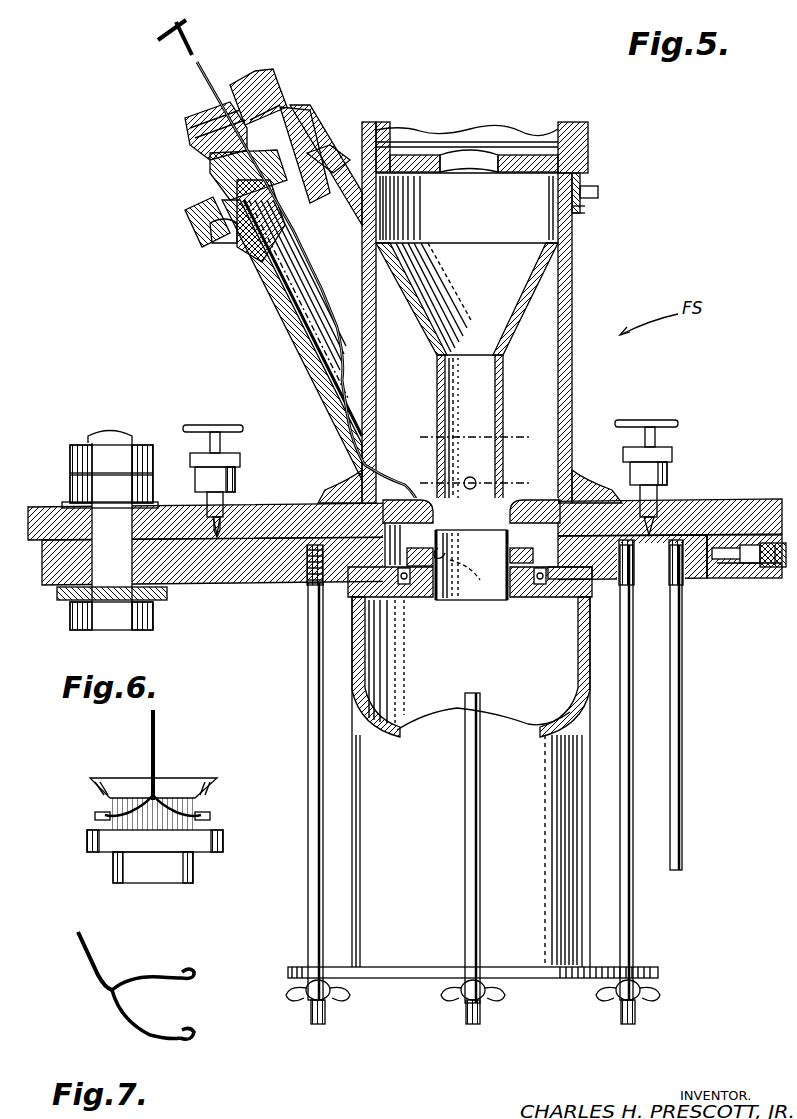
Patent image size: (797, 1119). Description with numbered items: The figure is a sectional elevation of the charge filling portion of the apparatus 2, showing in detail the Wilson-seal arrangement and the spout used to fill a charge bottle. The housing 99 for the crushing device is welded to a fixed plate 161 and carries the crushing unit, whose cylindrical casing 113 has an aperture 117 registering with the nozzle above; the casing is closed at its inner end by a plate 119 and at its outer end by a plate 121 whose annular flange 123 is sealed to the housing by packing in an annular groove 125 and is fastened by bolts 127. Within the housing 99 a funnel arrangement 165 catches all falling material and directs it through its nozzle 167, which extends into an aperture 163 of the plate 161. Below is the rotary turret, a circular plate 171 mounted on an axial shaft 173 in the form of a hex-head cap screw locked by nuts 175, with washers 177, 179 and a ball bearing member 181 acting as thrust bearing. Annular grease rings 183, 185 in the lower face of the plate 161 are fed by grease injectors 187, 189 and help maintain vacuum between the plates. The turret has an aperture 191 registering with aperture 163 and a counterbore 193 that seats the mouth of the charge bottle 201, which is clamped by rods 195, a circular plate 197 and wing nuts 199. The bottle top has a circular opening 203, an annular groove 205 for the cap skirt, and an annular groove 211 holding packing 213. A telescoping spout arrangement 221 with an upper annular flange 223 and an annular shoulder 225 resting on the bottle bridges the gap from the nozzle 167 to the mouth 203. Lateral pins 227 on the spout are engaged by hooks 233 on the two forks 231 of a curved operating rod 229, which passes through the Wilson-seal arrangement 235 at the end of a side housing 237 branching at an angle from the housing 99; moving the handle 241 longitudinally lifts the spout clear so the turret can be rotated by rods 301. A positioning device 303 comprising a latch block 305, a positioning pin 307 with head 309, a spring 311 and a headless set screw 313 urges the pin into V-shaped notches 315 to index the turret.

In FIG. 5, the apparatus 2 is at (640, 400).
In FIG. 5, the housing 99 is at (574, 306).
In FIG. 5, the cylindrical casing 113 is at (535, 150).
In FIG. 5, the aperture 117 is at (470, 142).
In FIG. 5, the plate 119 is at (383, 124).
In FIG. 5, the plate 121 is at (590, 135).
In FIG. 5, the annular flange 123 is at (592, 206).
In FIG. 5, the annular groove 125 is at (585, 178).
In FIG. 5, the bolts 127 is at (600, 193).
In FIG. 5, the plate 161 is at (290, 512).
In FIG. 5, the aperture 163 is at (580, 482).
In FIG. 5, the funnel arrangement 165 is at (562, 278).
In FIG. 5, the nozzle 167 is at (505, 382).
In FIG. 5, the circular plate 171 is at (246, 578).
In FIG. 5, the shaft 173 is at (110, 430).
In FIG. 5, the nuts 175 is at (140, 460).
In FIG. 5, the washer 177 is at (62, 504).
In FIG. 5, the washer 179 is at (66, 604).
In FIG. 5, the ball bearing member 181 is at (166, 596).
In FIG. 5, the annular grease ring 183 is at (240, 535).
In FIG. 5, the annular grease ring 185 is at (650, 545).
In FIG. 5, the grease injector 187 is at (232, 462).
In FIG. 5, the grease injector 189 is at (670, 465).
In FIG. 5, the aperture 191 is at (620, 582).
In FIG. 5, the counterbore 193 is at (355, 622).
In FIG. 5, the rods 195 is at (308, 916).
In FIG. 5, the circular plate 197 is at (660, 970).
In FIG. 5, the wing nuts 199 is at (340, 1000).
In FIG. 5, the charge bottle 201 is at (376, 836).
In FIG. 5, the circular opening 203 is at (470, 583).
In FIG. 5, the annular groove 205 is at (537, 583).
In FIG. 5, the annular groove 211 is at (316, 588).
In FIG. 5, the packing 213 is at (338, 482).
In FIG. 5, the telescoping spout arrangement 221 is at (530, 445).
In FIG. 6, the telescoping spout arrangement 221 is at (112, 870).
In FIG. 5, the upper annular flange 223 is at (530, 510).
In FIG. 6, the upper annular flange 223 is at (90, 784).
In FIG. 5, the annular shoulder 225 is at (530, 600).
In FIG. 6, the annular shoulder 225 is at (220, 852).
In FIG. 5, the pins 227 is at (440, 560).
In FIG. 6, the pins 227 is at (210, 815).
In FIG. 5, the operating rod 229 is at (335, 336).
In FIG. 6, the operating rod 229 is at (160, 760).
In FIG. 7, the operating rod 229 is at (80, 946).
In FIG. 6, the branches or forks 231 is at (136, 803).
In FIG. 7, the branches or forks 231 is at (146, 978).
In FIG. 5, the hook 233 is at (472, 585).
In FIG. 7, the hook 233 is at (192, 971).
In FIG. 5, the Wilson-seal arrangement 235 is at (203, 176).
In FIG. 5, the side housing 237 is at (258, 270).
In FIG. 5, the handle 241 is at (190, 25).
In FIG. 5, the rods 301 is at (684, 742).
In FIG. 5, the positioning device 303 is at (752, 582).
In FIG. 5, the latch block 305 is at (728, 578).
In FIG. 5, the positioning pin 307 is at (722, 548).
In FIG. 5, the head 309 is at (748, 545).
In FIG. 5, the spring 311 is at (772, 542).
In FIG. 5, the headless set screw 313 is at (772, 578).
In FIG. 5, the V-shaped notches 315 is at (708, 578).